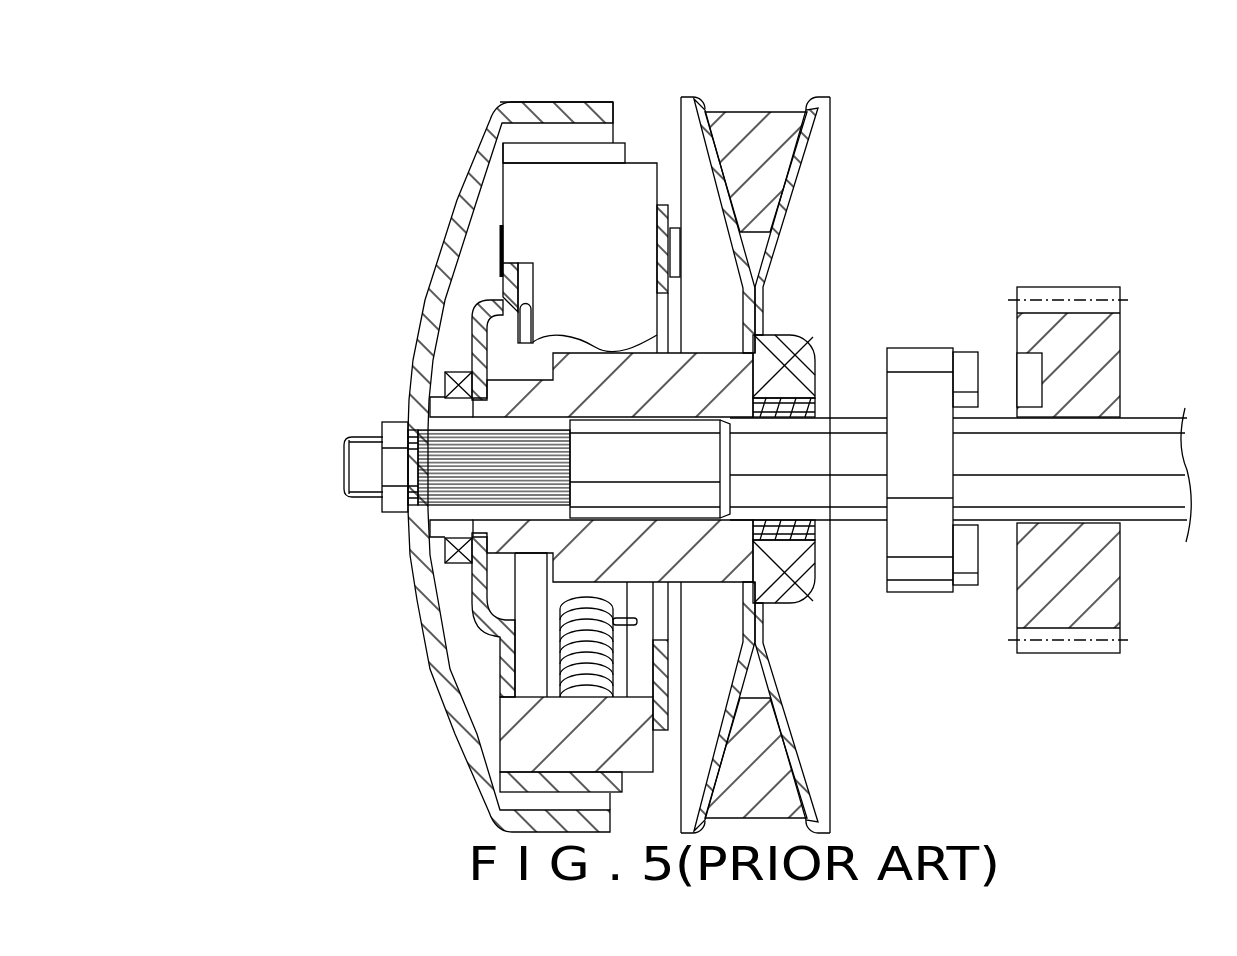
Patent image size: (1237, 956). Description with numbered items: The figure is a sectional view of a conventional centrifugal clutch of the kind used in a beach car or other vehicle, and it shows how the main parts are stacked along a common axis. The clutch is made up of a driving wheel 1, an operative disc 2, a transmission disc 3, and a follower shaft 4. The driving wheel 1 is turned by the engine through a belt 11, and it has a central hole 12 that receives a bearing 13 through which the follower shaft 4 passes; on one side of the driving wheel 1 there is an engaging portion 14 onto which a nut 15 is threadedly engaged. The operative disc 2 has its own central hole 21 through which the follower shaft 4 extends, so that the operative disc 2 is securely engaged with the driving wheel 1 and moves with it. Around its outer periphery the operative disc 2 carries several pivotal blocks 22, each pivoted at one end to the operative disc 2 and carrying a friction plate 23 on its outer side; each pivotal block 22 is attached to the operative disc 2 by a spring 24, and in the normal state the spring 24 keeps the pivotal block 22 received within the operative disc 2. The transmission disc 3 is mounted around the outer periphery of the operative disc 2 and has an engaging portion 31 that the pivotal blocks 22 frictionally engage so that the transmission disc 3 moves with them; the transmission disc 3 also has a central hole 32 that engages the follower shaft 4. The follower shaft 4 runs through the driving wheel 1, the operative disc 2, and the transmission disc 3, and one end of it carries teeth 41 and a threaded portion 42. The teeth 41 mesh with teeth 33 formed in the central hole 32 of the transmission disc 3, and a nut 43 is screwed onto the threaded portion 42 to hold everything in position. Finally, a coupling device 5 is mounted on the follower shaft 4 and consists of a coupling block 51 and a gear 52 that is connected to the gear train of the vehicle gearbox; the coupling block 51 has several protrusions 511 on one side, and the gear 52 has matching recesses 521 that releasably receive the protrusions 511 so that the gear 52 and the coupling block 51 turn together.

The driving wheel 1 is at (832, 192).
The operative disc 2 is at (633, 163).
The transmission disc 3 is at (437, 640).
The follower shaft 4 is at (817, 475).
The coupling device 5 is at (950, 593).
The belt 11 is at (758, 165).
The central hole 12 is at (752, 357).
The bearing 13 is at (817, 382).
The engaging portion 14 is at (460, 409).
The nut 15 is at (442, 378).
The central hole 21 is at (455, 386).
The pivotal block 22 is at (590, 193).
The friction plate 23 is at (560, 158).
The spring 24 is at (557, 683).
The engaging portion 31 is at (530, 102).
The central hole 32 is at (412, 505).
The teeth 33 is at (412, 517).
The teeth 41 is at (460, 453).
The threaded portion 42 is at (363, 462).
The nut 43 is at (400, 487).
The coupling block 51 is at (925, 367).
The gear 52 is at (1105, 363).
The protrusions 511 is at (967, 378).
The recesses 521 is at (1030, 380).